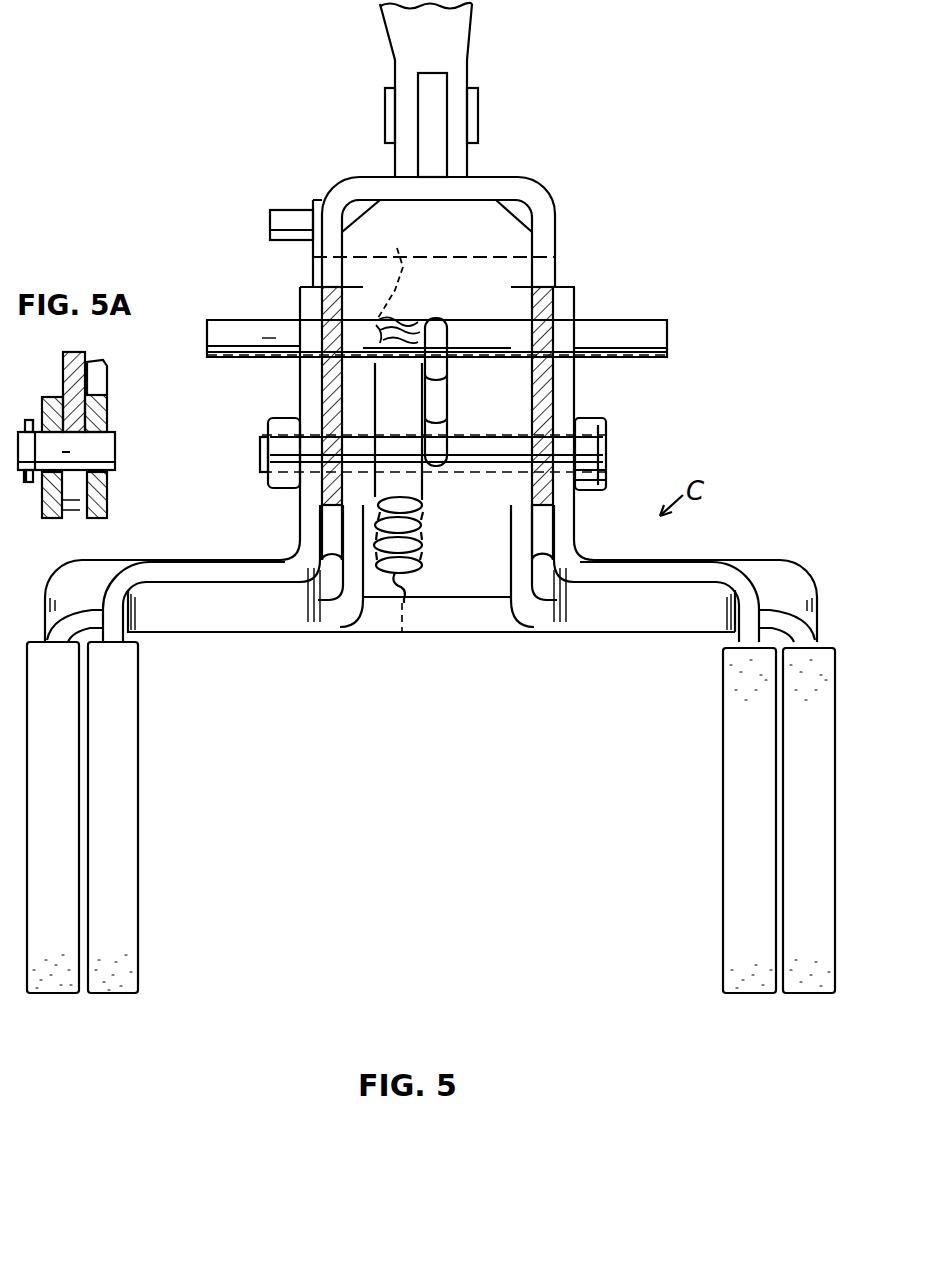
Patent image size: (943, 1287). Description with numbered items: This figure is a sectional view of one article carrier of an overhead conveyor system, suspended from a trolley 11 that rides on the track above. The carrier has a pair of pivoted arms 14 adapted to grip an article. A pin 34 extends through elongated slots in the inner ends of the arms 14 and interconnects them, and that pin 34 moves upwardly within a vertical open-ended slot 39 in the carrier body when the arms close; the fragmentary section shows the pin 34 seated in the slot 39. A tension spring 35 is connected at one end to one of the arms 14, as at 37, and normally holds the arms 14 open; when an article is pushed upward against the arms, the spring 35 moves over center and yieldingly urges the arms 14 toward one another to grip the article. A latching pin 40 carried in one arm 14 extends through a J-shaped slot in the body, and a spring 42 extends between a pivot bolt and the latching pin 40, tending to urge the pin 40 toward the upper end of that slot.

In FIG. 5, the trolley 11 is at (470, 24).
In FIG. 5, the arm 14 is at (50, 985).
In FIG. 5, the pin 34 is at (606, 452).
In FIG. 5A, the pin 34 is at (110, 447).
In FIG. 5, the tension spring 35 is at (430, 577).
In FIG. 5, the spring connection point 37 is at (368, 628).
In FIG. 5A, the vertical open-ended slot 39 is at (75, 487).
In FIG. 5, the latching pin 40 is at (643, 318).
In FIG. 5, the spring 42 is at (458, 392).